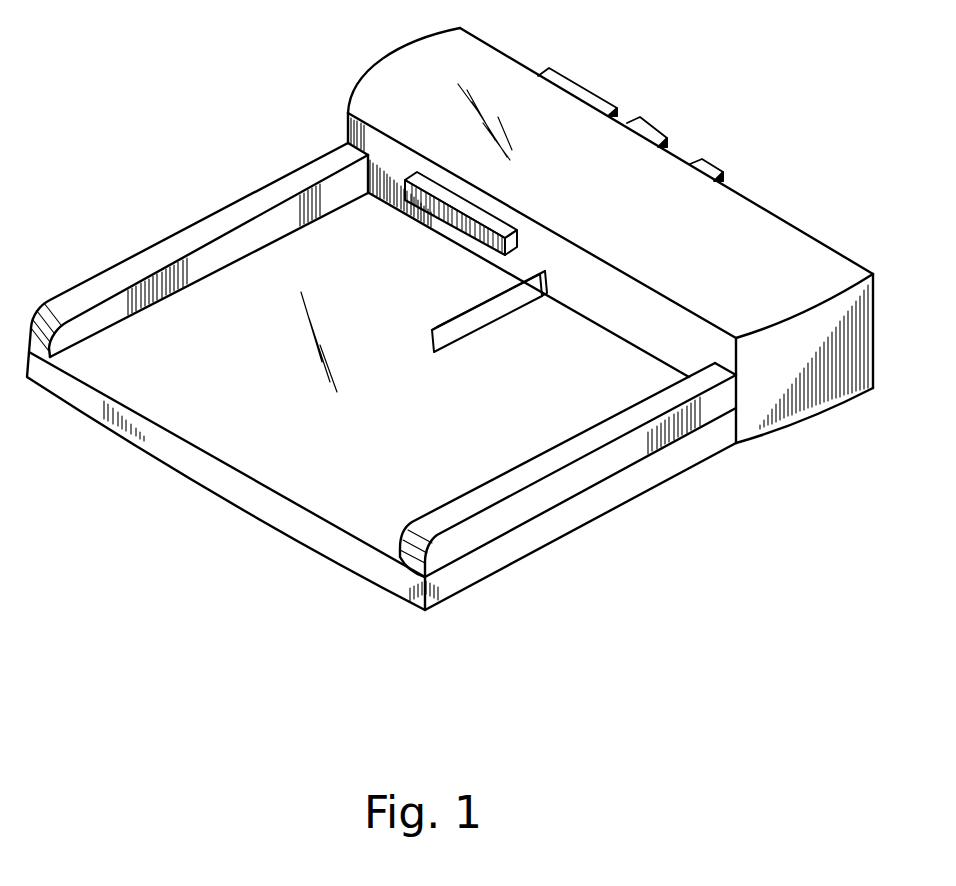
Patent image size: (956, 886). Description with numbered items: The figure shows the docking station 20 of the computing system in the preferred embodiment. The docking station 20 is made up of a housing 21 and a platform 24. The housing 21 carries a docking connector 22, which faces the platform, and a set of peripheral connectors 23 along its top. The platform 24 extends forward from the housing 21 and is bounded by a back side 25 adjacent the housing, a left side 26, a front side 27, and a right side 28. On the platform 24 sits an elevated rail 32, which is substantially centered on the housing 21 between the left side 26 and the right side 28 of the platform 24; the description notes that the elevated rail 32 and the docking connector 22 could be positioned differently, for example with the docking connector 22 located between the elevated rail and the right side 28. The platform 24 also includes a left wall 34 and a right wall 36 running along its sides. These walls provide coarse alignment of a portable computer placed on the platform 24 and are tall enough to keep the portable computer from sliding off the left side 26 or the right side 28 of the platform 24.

The docking station 20 is at (286, 76).
The housing 21 is at (803, 230).
The docking connector 22 is at (493, 222).
The peripheral connectors 23 is at (712, 163).
The platform 24 is at (422, 461).
The back side 25 is at (500, 270).
The left side 26 is at (107, 317).
The front side 27 is at (223, 487).
The right side 28 is at (697, 462).
The elevated rail 32 is at (470, 328).
The left wall 34 is at (225, 220).
The right wall 36 is at (710, 412).